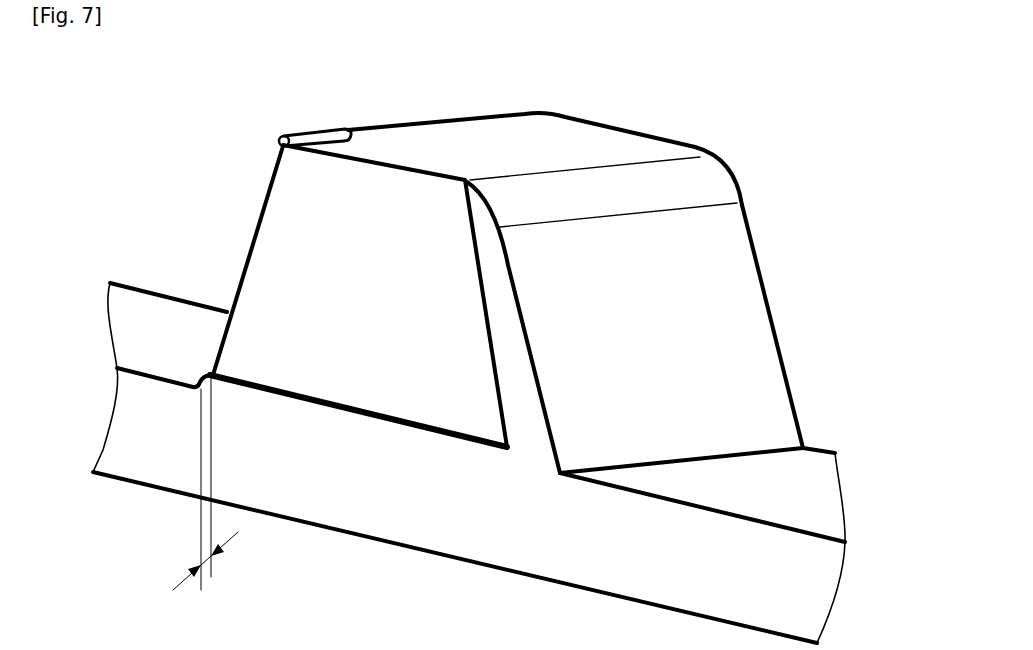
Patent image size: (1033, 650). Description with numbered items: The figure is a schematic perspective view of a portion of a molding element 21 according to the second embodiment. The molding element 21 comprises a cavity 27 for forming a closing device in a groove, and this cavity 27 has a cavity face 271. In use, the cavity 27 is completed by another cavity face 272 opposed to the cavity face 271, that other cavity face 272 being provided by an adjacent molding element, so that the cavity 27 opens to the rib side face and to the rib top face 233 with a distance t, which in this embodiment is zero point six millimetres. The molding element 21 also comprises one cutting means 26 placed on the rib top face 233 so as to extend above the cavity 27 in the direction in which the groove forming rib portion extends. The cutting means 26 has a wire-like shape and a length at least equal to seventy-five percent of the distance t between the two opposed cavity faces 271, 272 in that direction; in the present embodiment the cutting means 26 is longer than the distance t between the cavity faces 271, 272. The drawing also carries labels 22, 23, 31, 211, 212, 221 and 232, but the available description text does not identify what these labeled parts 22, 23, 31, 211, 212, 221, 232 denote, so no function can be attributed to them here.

The molding element 21 is at (542, 275).
The base plate 22 is at (486, 390).
The top portion 23 is at (602, 273).
The cutting means 26 is at (295, 131).
The cavity 27 is at (562, 327).
The side edge 31 is at (236, 236).
The plate edge 211 is at (825, 443).
The plate top surface 212 is at (619, 561).
The plate portion 221 is at (132, 327).
The side wall 232 is at (733, 282).
The rib top face 233 is at (558, 135).
The cavity face 271 is at (322, 289).
The other cavity face 272 is at (780, 334).